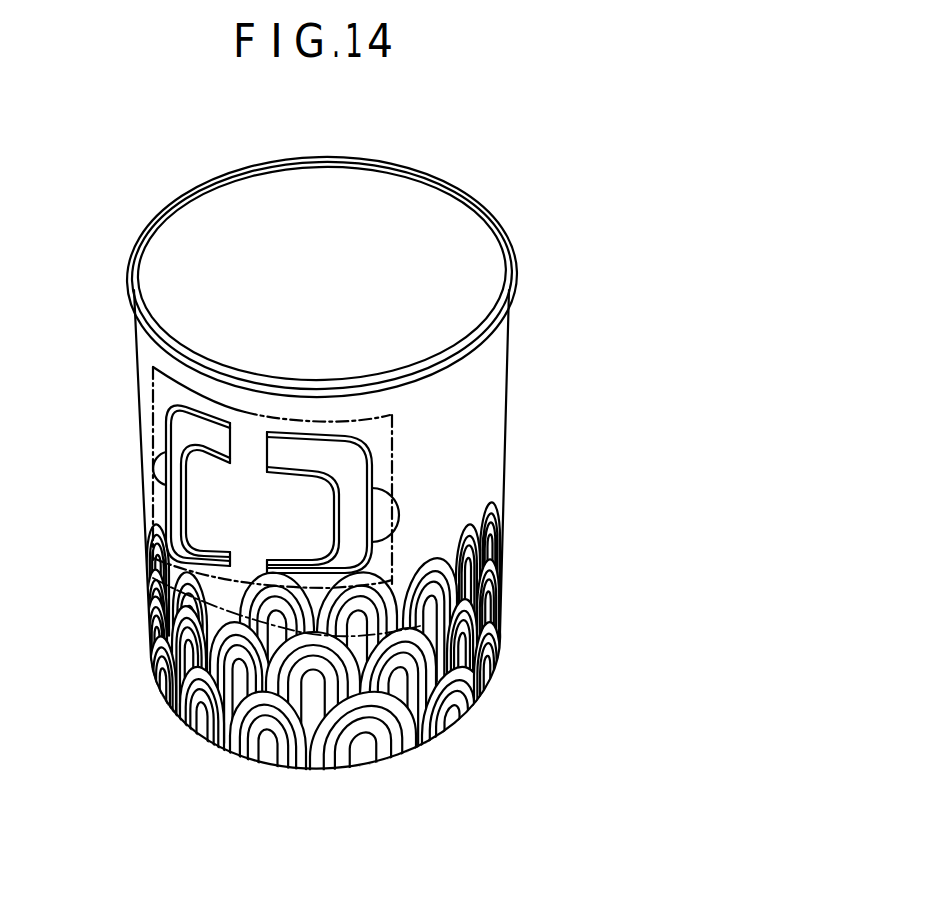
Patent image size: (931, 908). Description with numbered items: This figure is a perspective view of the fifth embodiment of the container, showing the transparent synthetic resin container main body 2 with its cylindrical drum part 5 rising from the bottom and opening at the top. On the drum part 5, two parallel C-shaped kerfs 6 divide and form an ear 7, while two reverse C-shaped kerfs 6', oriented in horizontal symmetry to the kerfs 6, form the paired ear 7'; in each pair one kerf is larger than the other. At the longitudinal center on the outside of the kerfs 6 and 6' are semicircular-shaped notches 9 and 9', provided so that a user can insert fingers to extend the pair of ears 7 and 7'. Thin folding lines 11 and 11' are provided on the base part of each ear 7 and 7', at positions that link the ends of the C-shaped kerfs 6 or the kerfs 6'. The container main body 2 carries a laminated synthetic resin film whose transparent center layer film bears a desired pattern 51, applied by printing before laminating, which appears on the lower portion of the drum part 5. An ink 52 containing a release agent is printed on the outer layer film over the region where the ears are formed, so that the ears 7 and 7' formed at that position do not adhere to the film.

The container main body 2 is at (536, 252).
The cylindrical drum part 5 is at (512, 379).
The kerf 6 is at (148, 469).
The kerf 6' is at (430, 483).
The ear 7 is at (148, 501).
The ear 7' is at (427, 523).
The semicircular-shaped notch 9 is at (116, 458).
The semicircular-shaped notch 9' is at (480, 495).
The thin folding line 11 is at (227, 443).
The thin folding line 11' is at (276, 438).
The pattern 51 is at (452, 733).
The ink 52 is at (297, 427).